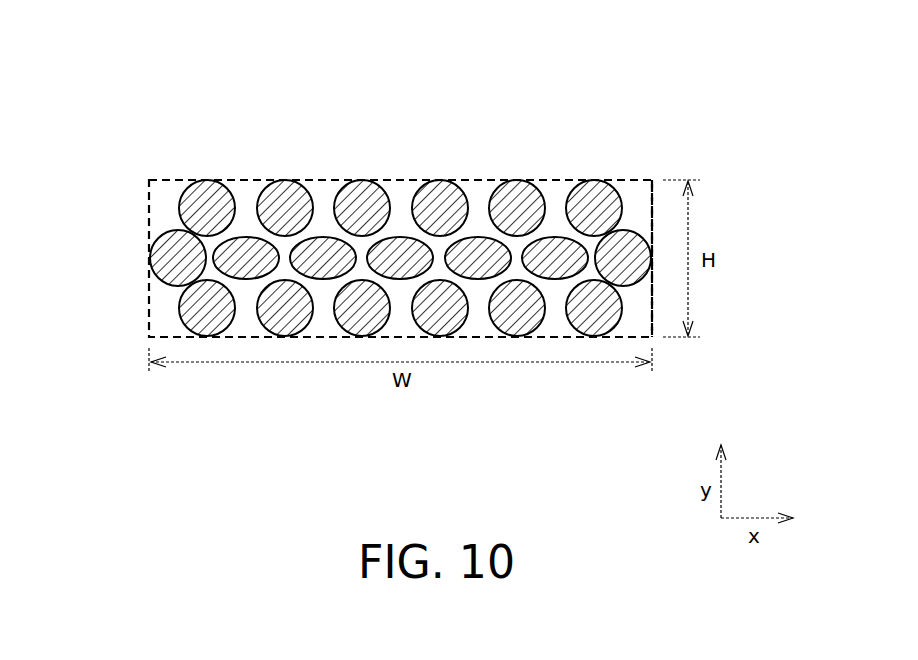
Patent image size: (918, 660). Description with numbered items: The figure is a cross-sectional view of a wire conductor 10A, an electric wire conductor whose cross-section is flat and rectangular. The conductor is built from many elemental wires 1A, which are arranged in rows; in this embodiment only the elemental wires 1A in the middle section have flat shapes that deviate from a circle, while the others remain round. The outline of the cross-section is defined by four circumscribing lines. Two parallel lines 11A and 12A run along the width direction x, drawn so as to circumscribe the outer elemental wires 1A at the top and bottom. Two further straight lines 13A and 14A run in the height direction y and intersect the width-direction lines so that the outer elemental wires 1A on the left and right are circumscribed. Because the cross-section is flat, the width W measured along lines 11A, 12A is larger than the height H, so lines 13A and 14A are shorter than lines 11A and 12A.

The wire conductor 10A is at (406, 223).
The elemental wires 1A is at (210, 200).
The line 11A is at (361, 171).
The line 12A is at (560, 338).
The line 13A is at (147, 226).
The line 14A is at (658, 228).